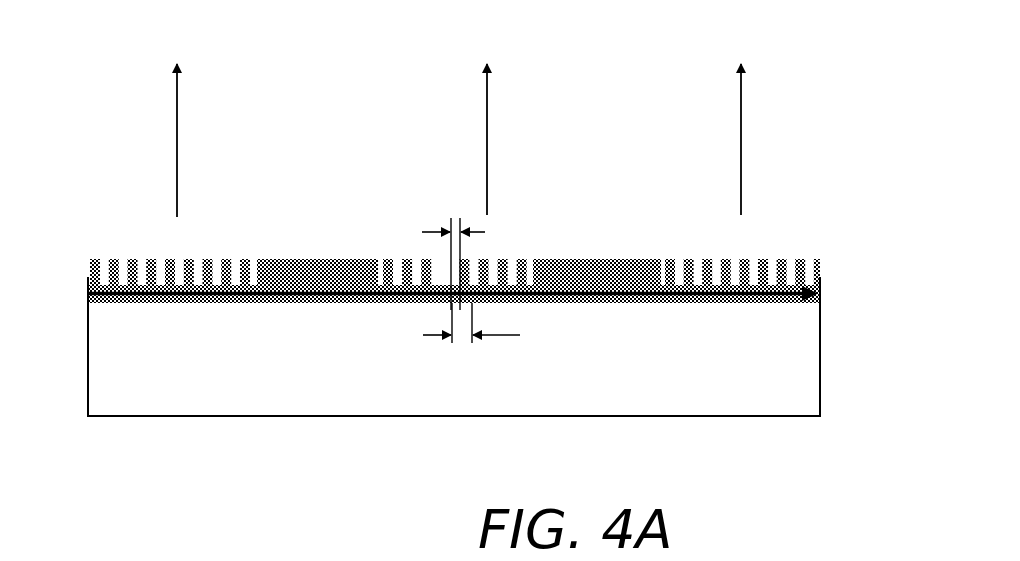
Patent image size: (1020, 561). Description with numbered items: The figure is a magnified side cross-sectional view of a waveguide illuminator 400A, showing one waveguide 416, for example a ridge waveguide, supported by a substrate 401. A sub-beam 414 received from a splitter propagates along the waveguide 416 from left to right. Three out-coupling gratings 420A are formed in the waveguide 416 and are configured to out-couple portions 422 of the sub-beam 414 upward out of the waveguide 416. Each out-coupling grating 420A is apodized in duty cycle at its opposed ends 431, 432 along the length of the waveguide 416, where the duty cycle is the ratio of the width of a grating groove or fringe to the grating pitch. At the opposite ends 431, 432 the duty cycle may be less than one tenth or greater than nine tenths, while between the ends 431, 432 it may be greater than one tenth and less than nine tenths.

The waveguide illuminator 400A is at (413, 97).
The substrate 401 is at (658, 369).
The sub-beam 414 is at (347, 300).
The waveguide 416 is at (460, 308).
The out-coupling grating 420A is at (145, 241).
The portion of sub-beam 422 is at (177, 90).
The end of out-coupling grating 431 is at (95, 251).
The end of out-coupling grating 432 is at (258, 250).